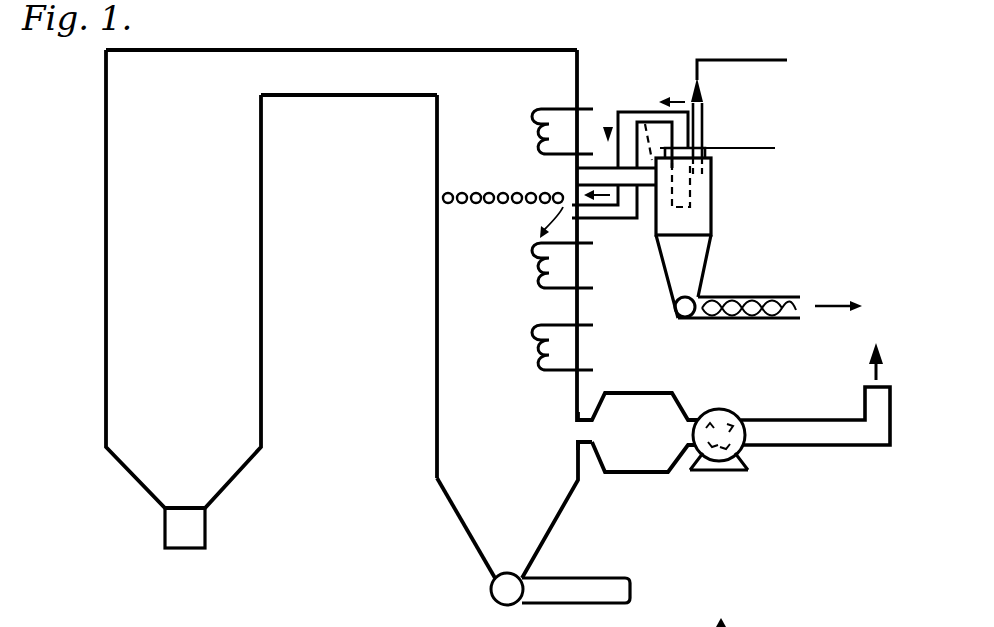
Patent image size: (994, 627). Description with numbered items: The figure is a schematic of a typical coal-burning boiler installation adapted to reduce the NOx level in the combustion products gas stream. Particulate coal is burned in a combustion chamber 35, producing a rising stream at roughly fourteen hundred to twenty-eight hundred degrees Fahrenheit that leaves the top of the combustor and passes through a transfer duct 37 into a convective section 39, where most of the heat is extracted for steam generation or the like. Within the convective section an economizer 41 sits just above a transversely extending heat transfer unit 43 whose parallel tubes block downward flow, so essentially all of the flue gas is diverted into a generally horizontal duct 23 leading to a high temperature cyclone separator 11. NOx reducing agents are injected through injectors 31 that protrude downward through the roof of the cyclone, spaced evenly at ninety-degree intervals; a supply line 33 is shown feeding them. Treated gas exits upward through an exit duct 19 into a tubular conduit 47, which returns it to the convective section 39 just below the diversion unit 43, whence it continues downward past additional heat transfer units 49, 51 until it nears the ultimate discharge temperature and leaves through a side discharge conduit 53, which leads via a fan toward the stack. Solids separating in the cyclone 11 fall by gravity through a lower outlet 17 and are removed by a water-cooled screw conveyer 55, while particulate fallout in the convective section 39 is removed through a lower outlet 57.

The cyclone separator 11 is at (722, 238).
The lower outlet 17 is at (670, 297).
The exit duct 19 is at (700, 190).
The duct 23 is at (558, 176).
The injector 31 is at (641, 124).
The fuel supply pipe 33 is at (786, 62).
The combustion chamber 35 is at (183, 299).
The transfer duct 37 is at (341, 72).
The convective section 39 is at (463, 120).
The economizer 41 is at (537, 109).
The heat transfer unit 43 is at (428, 201).
The tubular conduit 47 is at (654, 112).
The heat transfer unit 49 is at (531, 253).
The heat transfer unit 51 is at (531, 328).
The side discharge conduit 53 is at (583, 438).
The screw conveyer 55 is at (770, 320).
The lower outlet 57 is at (500, 588).